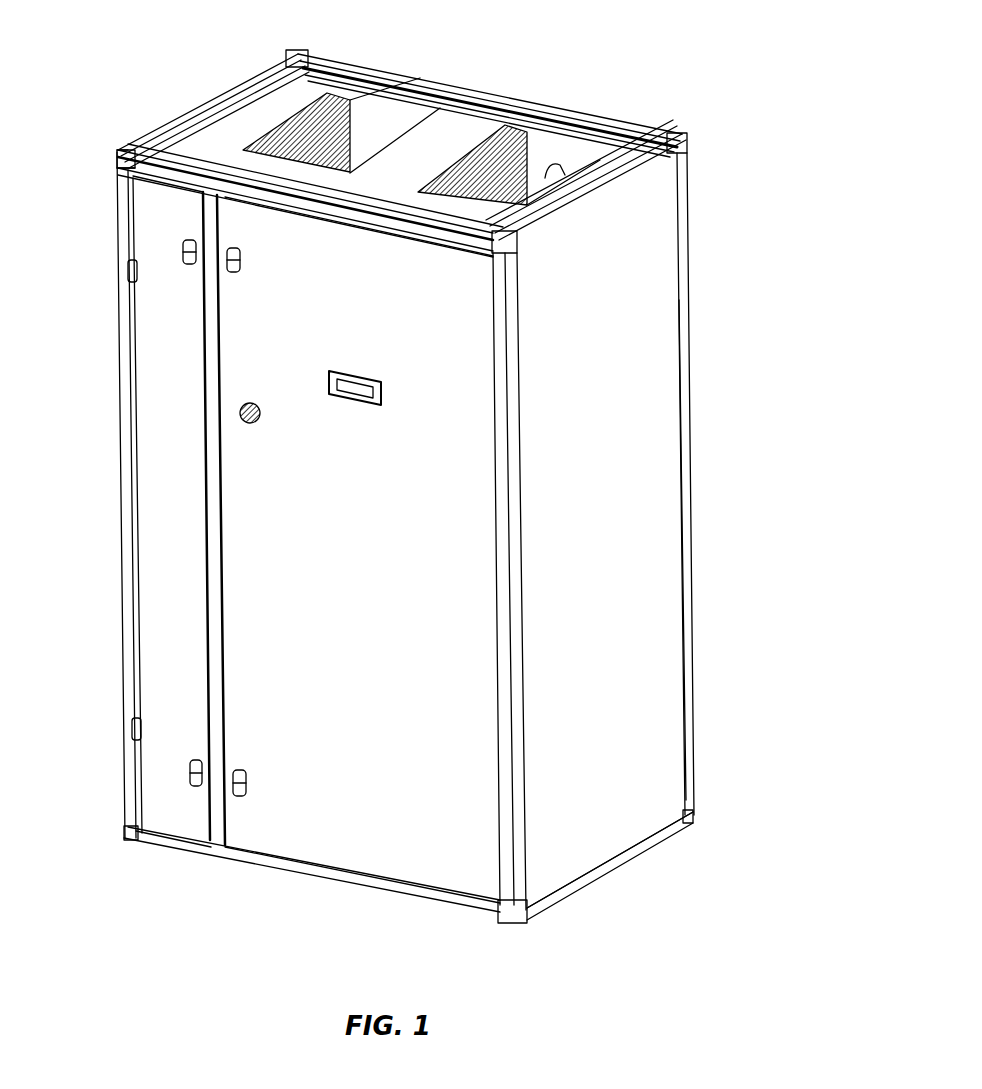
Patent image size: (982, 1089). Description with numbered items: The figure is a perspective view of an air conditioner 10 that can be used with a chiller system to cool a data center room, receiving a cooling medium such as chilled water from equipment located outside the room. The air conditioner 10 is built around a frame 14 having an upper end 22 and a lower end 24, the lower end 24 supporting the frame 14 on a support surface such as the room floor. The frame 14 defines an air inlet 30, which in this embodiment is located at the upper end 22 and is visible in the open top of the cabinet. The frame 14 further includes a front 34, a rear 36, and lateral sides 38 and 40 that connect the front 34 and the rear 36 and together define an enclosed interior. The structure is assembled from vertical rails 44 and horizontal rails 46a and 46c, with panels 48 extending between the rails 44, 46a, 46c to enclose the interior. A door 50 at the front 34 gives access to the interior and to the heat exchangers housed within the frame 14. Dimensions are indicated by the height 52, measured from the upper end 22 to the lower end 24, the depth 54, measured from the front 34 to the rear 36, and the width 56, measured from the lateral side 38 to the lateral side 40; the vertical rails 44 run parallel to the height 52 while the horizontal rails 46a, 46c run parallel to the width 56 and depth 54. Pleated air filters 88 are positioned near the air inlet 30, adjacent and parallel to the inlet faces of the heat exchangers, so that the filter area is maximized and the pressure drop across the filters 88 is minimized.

The air conditioner 10 is at (800, 177).
The frame 14 is at (125, 370).
The upper end 22 is at (117, 152).
The lower end 24 is at (258, 872).
The air inlet 30 is at (567, 172).
The front 34 is at (157, 430).
The rear 36 is at (687, 277).
The lateral side 38 is at (117, 275).
The lateral side 40 is at (652, 352).
The vertical rails 44 is at (503, 598).
The horizontal rail 46a is at (347, 212).
The horizontal rail 46c is at (352, 882).
The panels 48 is at (152, 536).
The door 50 is at (245, 575).
The height 52 is at (700, 815).
The depth 54 is at (693, 826).
The width 56 is at (758, 92).
The air filters 88 is at (355, 120).